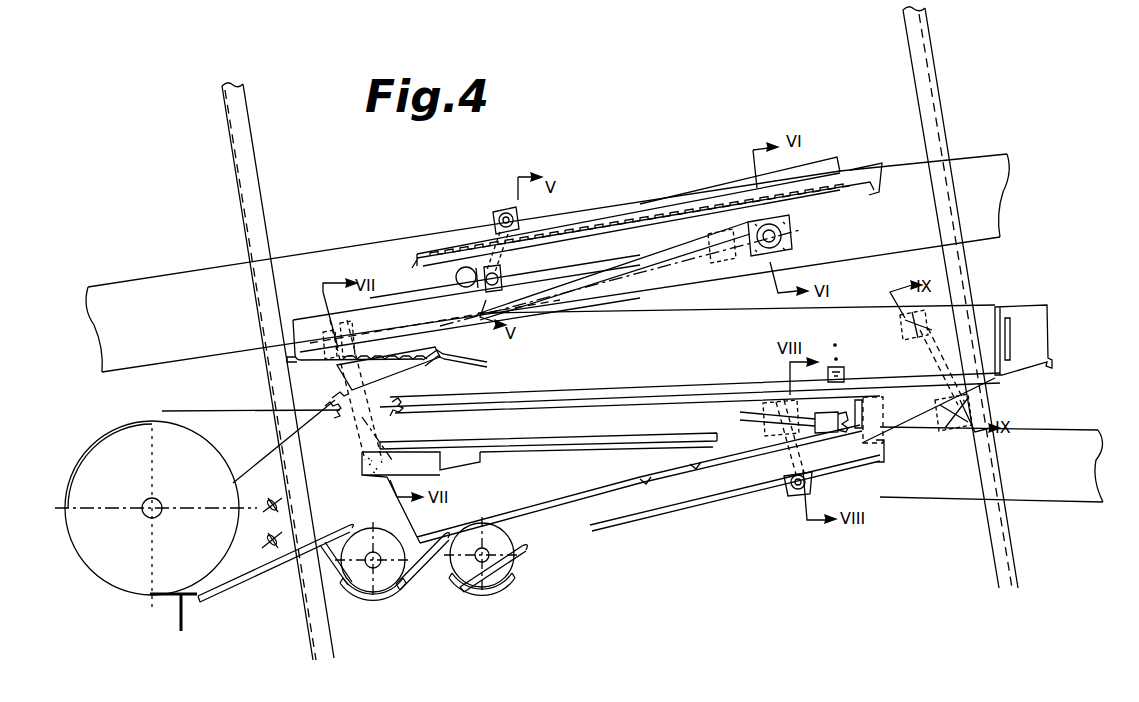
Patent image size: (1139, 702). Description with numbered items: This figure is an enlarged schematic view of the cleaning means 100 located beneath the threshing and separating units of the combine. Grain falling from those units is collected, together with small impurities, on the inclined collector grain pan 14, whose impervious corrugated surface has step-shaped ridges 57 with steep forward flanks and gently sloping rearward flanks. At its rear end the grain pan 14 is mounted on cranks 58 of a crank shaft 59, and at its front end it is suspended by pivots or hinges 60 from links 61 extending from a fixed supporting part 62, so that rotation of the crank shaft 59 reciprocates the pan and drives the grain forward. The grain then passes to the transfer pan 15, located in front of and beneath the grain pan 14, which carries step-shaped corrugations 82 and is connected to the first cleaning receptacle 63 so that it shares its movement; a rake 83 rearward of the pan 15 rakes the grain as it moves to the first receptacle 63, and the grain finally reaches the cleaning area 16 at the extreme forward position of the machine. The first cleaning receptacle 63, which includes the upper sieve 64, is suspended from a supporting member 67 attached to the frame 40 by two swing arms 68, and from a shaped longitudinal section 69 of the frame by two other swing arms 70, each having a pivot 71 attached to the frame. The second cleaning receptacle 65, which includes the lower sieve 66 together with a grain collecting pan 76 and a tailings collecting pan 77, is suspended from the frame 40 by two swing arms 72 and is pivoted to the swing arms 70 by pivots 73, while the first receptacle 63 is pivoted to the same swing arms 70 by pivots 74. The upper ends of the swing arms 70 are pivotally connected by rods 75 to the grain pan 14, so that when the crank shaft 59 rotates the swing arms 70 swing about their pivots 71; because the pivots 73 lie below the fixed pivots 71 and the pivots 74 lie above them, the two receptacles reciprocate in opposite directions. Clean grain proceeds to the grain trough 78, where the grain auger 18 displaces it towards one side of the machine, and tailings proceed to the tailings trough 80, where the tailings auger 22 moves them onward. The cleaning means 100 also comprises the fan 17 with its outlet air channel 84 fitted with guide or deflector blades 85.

The collector grain pan 14 is at (641, 198).
The transfer pan 15 is at (403, 352).
The cleaning area 16 is at (1012, 298).
The fan 17 is at (112, 575).
The grain auger 18 is at (398, 574).
The tailings auger 22 is at (510, 574).
The frame 40 is at (940, 52).
The step-shaped ridges 57 is at (600, 197).
The cranks 58 is at (793, 237).
The crank shaft 59 is at (838, 241).
The pivots or hinges 60 is at (501, 211).
The links 61 is at (468, 266).
The fixed supporting part 62 is at (504, 275).
The first cleaning receptacle 63 is at (750, 312).
The upper sieve 64 is at (663, 386).
The second cleaning receptacle 65 is at (678, 503).
The lower sieve 66 is at (570, 433).
The supporting member 67 is at (934, 318).
The swing arms or levers 68 is at (906, 350).
The shaped longitudinal section 69 is at (1081, 426).
The swing arms or levers 70 is at (352, 440).
The pivot 71 is at (330, 404).
The swing arms or levers 72 is at (830, 455).
The pivots 73 is at (370, 472).
The pivots 74 is at (333, 333).
The rods 75 is at (565, 312).
The grain collecting pan 76 is at (582, 487).
The tailings collecting pan 77 is at (640, 512).
The grain gully or trough 78 is at (378, 603).
The tailings gully or trough 80 is at (494, 596).
The step-shaped corrugations 82 is at (380, 357).
The rake 83 is at (489, 367).
The outlet air channel 84 is at (242, 583).
The guide or deflector blades 85 is at (290, 500).
The cleaning means 100 is at (384, 238).